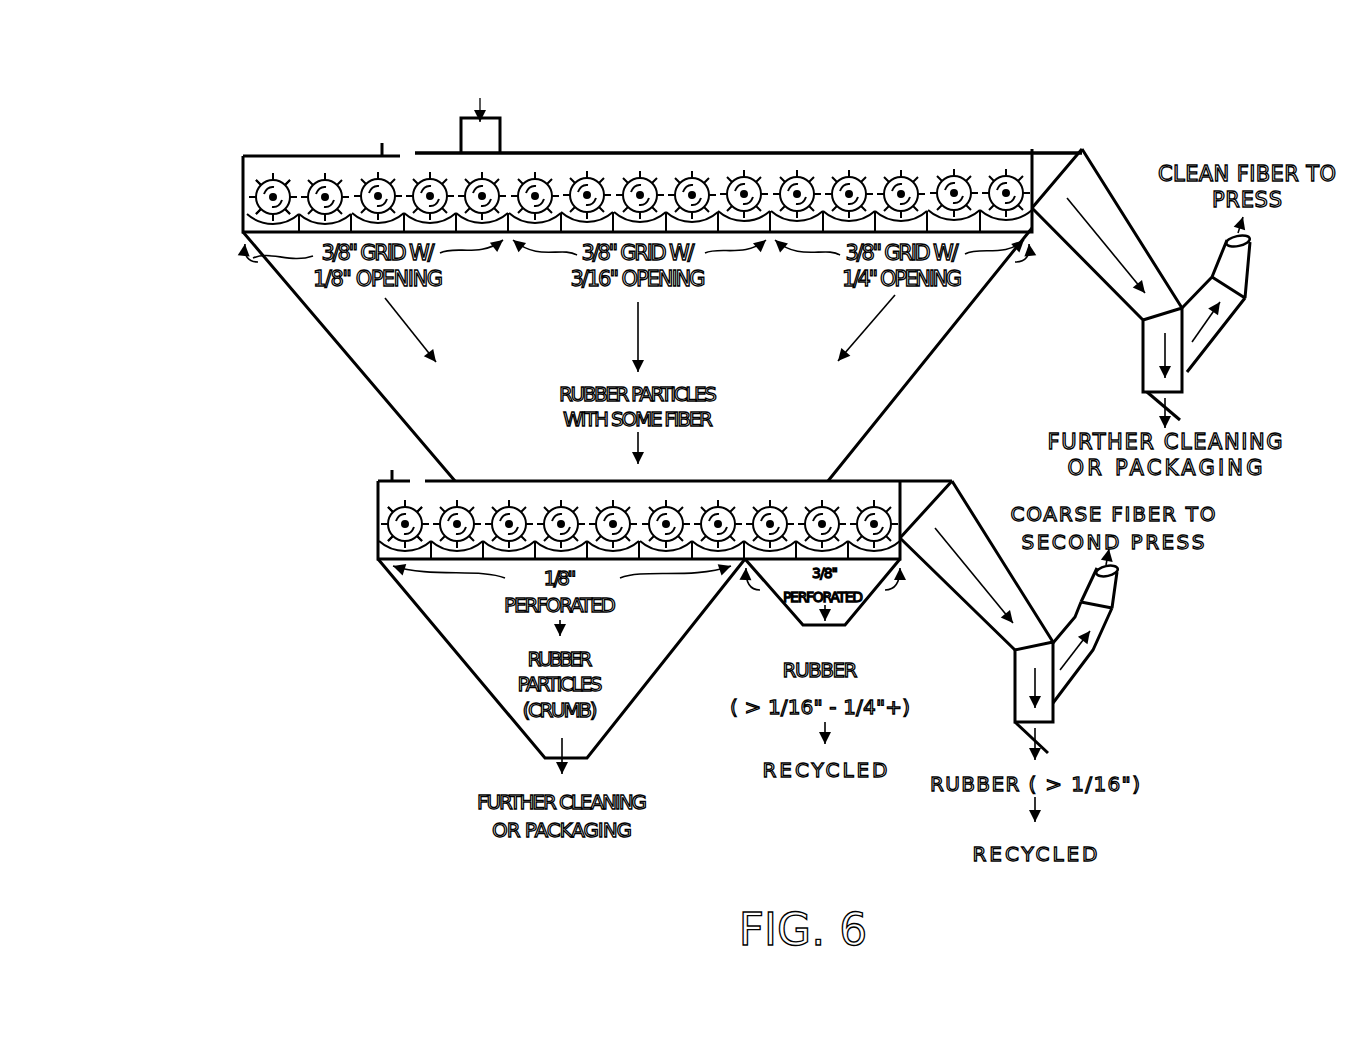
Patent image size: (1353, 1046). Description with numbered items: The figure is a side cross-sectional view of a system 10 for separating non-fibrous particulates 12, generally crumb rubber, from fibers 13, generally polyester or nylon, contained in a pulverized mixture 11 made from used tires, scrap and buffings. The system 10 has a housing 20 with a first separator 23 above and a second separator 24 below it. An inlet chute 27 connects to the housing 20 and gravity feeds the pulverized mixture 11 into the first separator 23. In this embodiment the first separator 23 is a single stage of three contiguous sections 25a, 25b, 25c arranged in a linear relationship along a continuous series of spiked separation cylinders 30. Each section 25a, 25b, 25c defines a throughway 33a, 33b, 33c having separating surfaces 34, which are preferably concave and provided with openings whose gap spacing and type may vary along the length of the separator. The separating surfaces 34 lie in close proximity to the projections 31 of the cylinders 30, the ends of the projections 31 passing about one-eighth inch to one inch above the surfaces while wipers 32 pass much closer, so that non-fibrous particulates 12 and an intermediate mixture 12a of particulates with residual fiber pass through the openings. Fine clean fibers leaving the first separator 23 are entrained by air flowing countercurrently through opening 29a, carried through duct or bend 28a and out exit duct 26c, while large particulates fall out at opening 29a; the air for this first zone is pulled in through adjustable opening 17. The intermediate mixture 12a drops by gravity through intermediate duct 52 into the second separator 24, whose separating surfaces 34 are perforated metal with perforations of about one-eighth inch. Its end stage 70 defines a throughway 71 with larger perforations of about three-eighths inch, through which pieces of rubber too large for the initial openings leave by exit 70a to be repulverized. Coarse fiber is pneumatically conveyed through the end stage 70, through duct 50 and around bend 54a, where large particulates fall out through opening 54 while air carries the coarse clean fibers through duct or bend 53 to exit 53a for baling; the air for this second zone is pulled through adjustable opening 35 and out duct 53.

The system 10 is at (307, 105).
The pulverized mixture 11 is at (485, 98).
The non-fibrous particulates 12 is at (561, 666).
The intermediate mixture 12a is at (668, 337).
The fibers 13 is at (1250, 223).
The adjustable opening 17 is at (405, 148).
The housing 20 is at (985, 149).
The first separator 23 is at (268, 152).
The second separator 24 is at (380, 480).
The first section 25a is at (352, 148).
The second section 25b is at (627, 142).
The third section 25c is at (877, 142).
The exit duct 26c is at (1240, 260).
The inlet chute 27 is at (502, 137).
The duct or bend 28a is at (1155, 335).
The opening 29a is at (1193, 408).
The cylinders 30 is at (263, 180).
The projections 31 is at (322, 172).
The wipers 32 is at (285, 177).
The throughway 33a is at (257, 192).
The throughway 33b is at (564, 195).
The throughway 33c is at (823, 194).
The separating surfaces 34 is at (483, 225).
The adjustable opening 35 is at (420, 480).
The duct 50 is at (963, 487).
The intermediate duct 52 is at (945, 338).
The duct or bend 53 is at (1077, 662).
The exit 53a is at (1103, 618).
The opening 54 is at (1048, 730).
The bend 54a is at (1025, 685).
The end stage 70 is at (855, 488).
The exit 70a is at (818, 628).
The throughway 71 is at (798, 557).